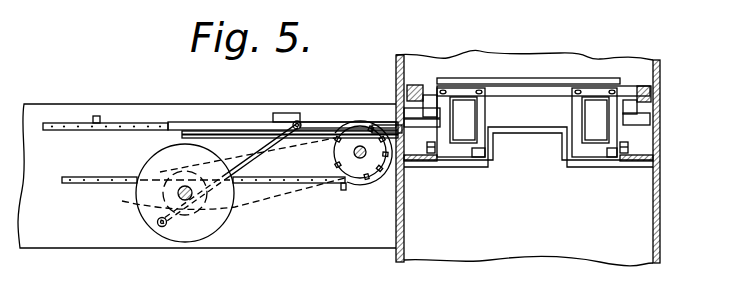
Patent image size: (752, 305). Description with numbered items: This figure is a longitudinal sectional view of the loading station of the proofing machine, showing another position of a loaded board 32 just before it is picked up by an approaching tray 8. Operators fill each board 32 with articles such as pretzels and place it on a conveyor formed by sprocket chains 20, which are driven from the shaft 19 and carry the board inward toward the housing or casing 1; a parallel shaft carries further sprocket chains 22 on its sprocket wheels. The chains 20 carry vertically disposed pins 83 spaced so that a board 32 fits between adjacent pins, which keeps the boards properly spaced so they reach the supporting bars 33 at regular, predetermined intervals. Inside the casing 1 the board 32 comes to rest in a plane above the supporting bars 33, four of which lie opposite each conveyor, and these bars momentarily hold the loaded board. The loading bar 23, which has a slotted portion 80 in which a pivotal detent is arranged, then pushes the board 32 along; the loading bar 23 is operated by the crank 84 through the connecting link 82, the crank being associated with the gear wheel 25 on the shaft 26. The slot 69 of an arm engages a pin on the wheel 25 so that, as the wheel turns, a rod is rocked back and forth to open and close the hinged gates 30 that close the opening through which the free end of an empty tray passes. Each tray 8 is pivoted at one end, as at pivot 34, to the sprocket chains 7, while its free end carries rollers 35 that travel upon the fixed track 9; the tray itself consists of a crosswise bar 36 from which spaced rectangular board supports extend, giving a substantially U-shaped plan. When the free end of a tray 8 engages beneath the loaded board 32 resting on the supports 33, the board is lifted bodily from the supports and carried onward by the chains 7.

The housing or casing 1 is at (397, 237).
The sprocket chains 7 is at (421, 84).
The tray 8 is at (566, 112).
The fixed track 9 is at (402, 57).
The shaft 19 is at (354, 152).
The sprocket chains 20 is at (128, 130).
The sprocket chains 22 is at (327, 184).
The loading bar 23 is at (295, 120).
The gear wheel 25 is at (146, 212).
The shaft 26 is at (177, 192).
The hinged gates 30 is at (430, 90).
The board 32 is at (336, 119).
The supporting bars 33 is at (541, 128).
The pivot 34 is at (428, 104).
The rollers 35 is at (433, 153).
The bar 36 is at (518, 80).
The slot 69 is at (417, 162).
The slotted portion 80 is at (386, 124).
The connecting link 82 is at (240, 177).
The pins 83 is at (110, 99).
The crank 84 is at (197, 240).